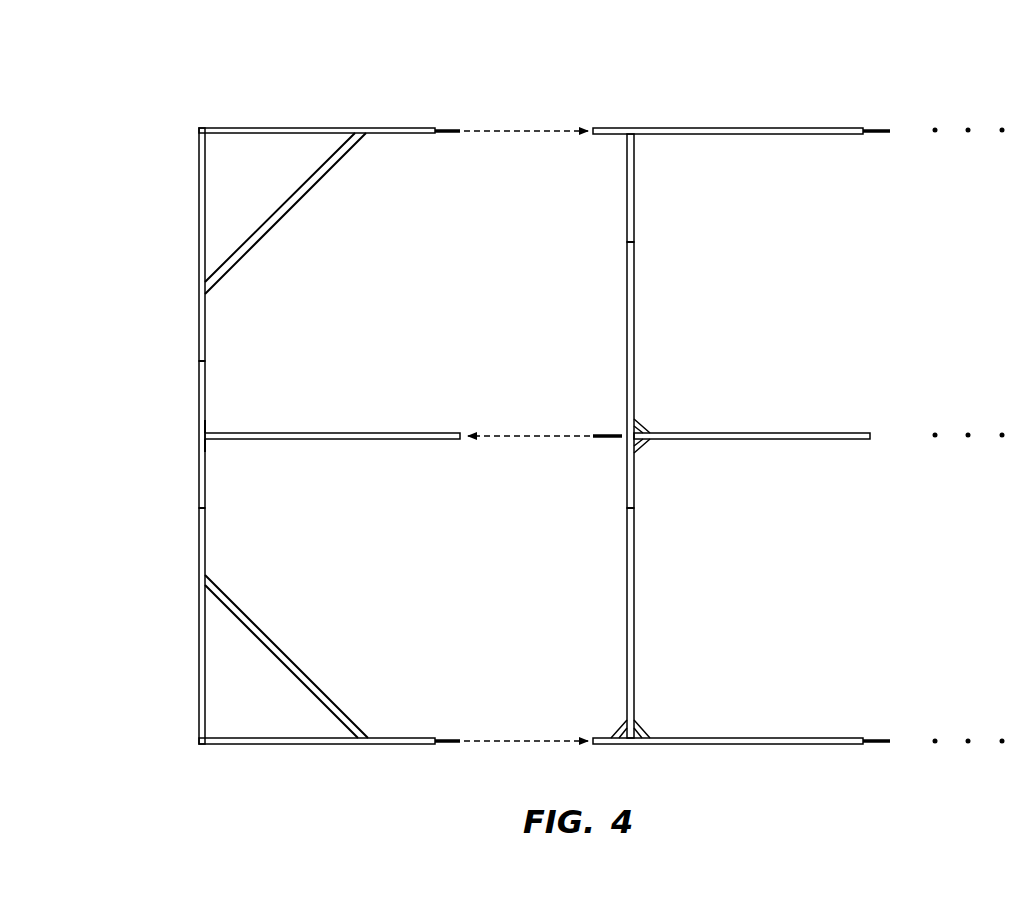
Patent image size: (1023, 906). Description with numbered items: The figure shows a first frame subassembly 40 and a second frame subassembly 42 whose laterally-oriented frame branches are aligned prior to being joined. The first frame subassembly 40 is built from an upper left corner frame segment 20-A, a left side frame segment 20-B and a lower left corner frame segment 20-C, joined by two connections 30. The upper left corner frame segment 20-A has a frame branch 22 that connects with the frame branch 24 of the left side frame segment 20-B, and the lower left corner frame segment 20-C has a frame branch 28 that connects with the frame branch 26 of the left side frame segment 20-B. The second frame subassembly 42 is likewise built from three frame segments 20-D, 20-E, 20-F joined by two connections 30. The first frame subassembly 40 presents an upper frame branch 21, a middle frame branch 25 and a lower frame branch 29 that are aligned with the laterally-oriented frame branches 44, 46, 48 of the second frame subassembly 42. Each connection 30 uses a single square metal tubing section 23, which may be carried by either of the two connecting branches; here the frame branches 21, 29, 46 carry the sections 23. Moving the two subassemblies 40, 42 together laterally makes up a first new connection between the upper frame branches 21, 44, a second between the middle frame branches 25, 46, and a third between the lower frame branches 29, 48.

The upper left corner frame segment 20-A is at (198, 192).
The left side frame segment 20-B is at (198, 424).
The lower left corner frame segment 20-C is at (198, 620).
The frame segment 20-D is at (626, 190).
The frame segment 20-E is at (626, 348).
The frame segment 20-F is at (626, 618).
The upper frame branch 21 is at (276, 127).
The frame branch 22 is at (198, 309).
The square metal tubing section 23 is at (456, 135).
The frame branch 24 is at (206, 400).
The middle frame branch 25 is at (397, 432).
The frame branch 26 is at (206, 448).
The frame branch 28 is at (198, 552).
The lower frame branch 29 is at (397, 737).
The connection 30 is at (194, 359).
The first frame subassembly 40 is at (386, 106).
The second frame subassembly 42 is at (719, 106).
The laterally-oriented frame branch 44 is at (613, 127).
The middle frame branch 46 is at (622, 431).
The lower frame branch 48 is at (604, 737).